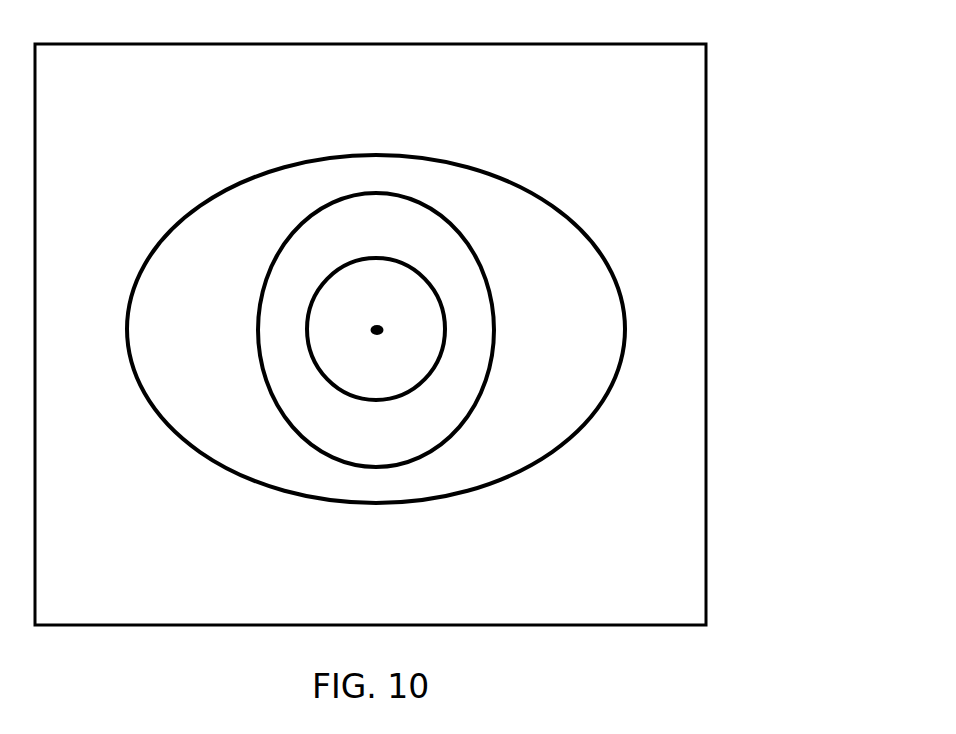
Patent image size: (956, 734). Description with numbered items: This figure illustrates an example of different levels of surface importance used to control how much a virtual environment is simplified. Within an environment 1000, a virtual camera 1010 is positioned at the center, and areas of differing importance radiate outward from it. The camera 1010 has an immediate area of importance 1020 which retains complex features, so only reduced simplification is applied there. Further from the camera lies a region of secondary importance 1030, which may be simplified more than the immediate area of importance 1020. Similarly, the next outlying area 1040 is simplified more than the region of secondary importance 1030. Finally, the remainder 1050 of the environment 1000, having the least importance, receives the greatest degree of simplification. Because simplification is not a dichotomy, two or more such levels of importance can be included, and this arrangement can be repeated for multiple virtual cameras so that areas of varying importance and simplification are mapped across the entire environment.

The environment 1000 is at (708, 133).
The camera 1010 is at (368, 324).
The immediate area of importance 1020 is at (332, 312).
The region of secondary importance 1030 is at (282, 328).
The area 1040 is at (218, 362).
The remainder 1050 is at (670, 233).